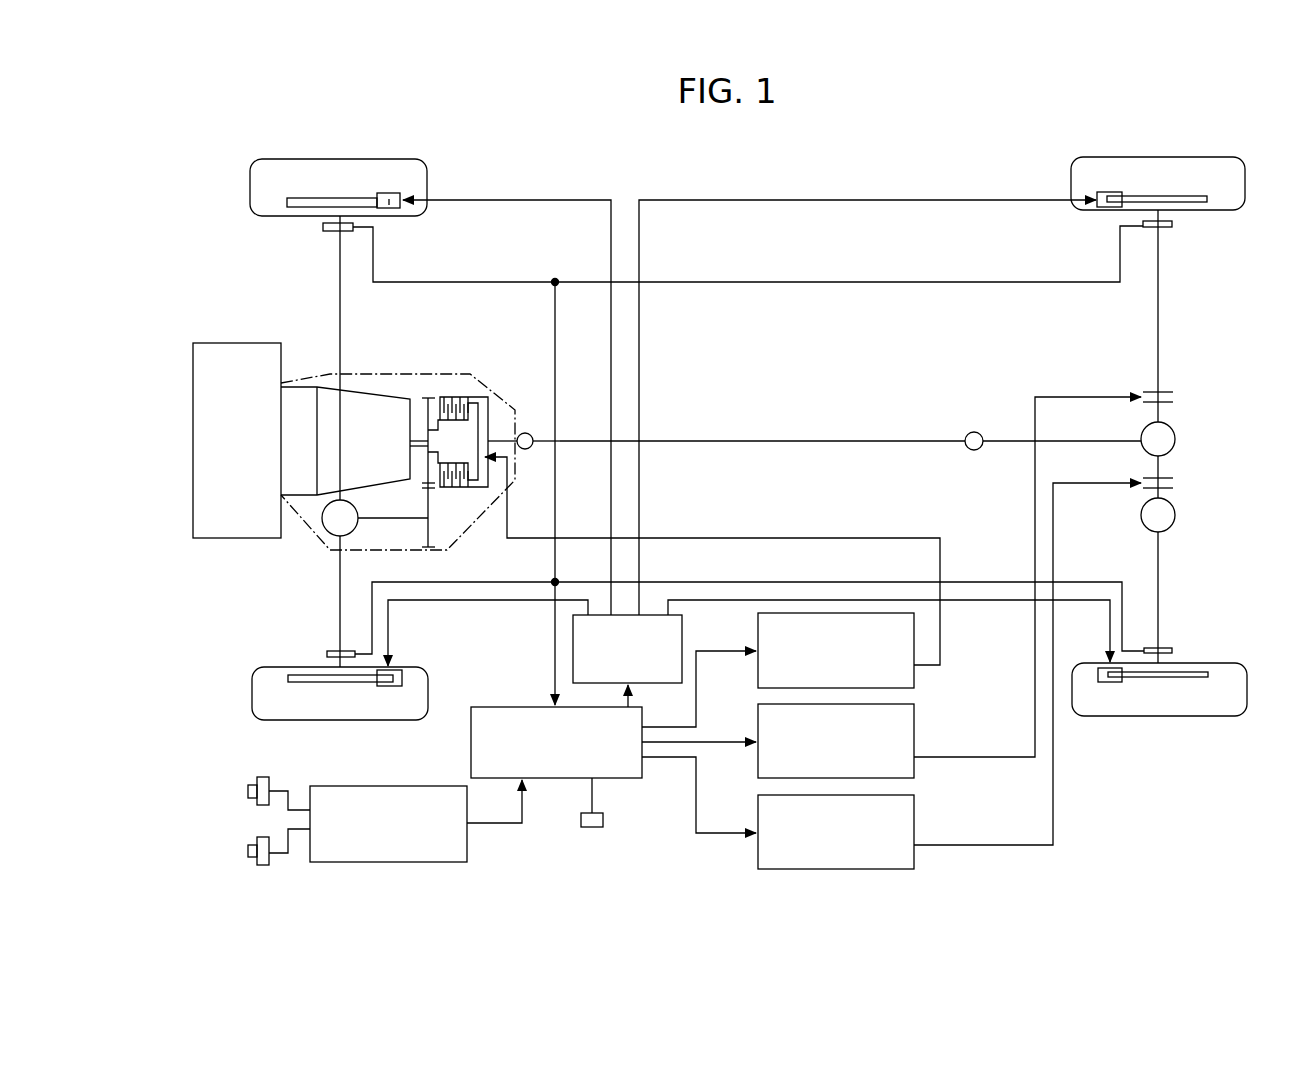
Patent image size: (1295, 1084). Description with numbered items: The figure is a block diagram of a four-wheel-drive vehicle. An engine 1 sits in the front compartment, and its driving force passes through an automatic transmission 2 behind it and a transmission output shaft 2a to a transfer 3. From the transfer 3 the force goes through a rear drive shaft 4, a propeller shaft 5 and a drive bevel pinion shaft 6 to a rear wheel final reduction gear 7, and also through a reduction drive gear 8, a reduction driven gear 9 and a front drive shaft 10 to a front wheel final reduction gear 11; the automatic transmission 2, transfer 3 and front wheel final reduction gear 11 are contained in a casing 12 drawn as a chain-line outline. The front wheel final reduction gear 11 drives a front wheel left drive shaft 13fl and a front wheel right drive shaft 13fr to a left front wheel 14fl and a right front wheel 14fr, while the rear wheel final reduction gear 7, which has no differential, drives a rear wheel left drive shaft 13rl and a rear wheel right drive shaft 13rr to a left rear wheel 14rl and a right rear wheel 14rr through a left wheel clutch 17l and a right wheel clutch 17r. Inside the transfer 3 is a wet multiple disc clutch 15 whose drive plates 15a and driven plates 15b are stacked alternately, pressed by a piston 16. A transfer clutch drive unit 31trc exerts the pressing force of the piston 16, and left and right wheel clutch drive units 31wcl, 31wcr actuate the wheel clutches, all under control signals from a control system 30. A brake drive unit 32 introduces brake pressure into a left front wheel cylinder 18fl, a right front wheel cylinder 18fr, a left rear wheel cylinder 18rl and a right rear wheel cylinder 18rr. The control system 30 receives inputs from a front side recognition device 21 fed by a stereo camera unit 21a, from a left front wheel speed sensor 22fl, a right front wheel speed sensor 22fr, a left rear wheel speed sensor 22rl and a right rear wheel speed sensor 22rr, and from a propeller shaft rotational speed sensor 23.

The engine 1 is at (193, 445).
The automatic transmission 2 is at (330, 384).
The transmission output shaft 2a is at (420, 440).
The transfer 3 is at (490, 426).
The rear drive shaft 4 is at (520, 440).
The propeller shaft 5 is at (718, 441).
The drive bevel pinion shaft 6 is at (1007, 441).
The rear wheel final reduction gear 7 is at (1176, 440).
The reduction drive gear 8 is at (428, 397).
The reduction driven gear 9 is at (436, 540).
The front drive shaft 10 is at (378, 519).
The front wheel final reduction gear 11 is at (346, 537).
The casing 12 is at (362, 372).
The front wheel right drive shaft 13fr is at (340, 313).
The front wheel left drive shaft 13fl is at (340, 584).
The rear wheel right drive shaft 13rr is at (1160, 310).
The rear wheel left drive shaft 13rl is at (1160, 564).
The right front wheel 14fr is at (298, 159).
The left front wheel 14fl is at (283, 720).
The right rear wheel 14rr is at (1199, 157).
The left rear wheel 14rl is at (1210, 716).
The wet multiple disc clutch 15 is at (490, 396).
The drive plates 15a is at (480, 410).
The driven plates 15b is at (472, 410).
The piston 16 is at (479, 410).
The right wheel clutch 17r is at (1175, 397).
The left wheel clutch 17l is at (1175, 484).
The right front wheel cylinder 18fr is at (389, 193).
The left front wheel cylinder 18fl is at (388, 686).
The right rear wheel cylinder 18rr is at (1110, 192).
The left rear wheel cylinder 18rl is at (1110, 682).
The front side recognition device 21 is at (467, 848).
The stereo camera unit 21a is at (248, 852).
The right front wheel speed sensor 22fr is at (323, 227).
The left front wheel speed sensor 22fl is at (327, 654).
The right rear wheel speed sensor 22rr is at (1172, 226).
The left rear wheel speed sensor 22rl is at (1172, 651).
The propeller shaft rotational speed sensor 23 is at (591, 827).
The control system 30 is at (471, 765).
The transfer clutch drive unit 31trc is at (914, 665).
The right wheel clutch drive unit 31wcr is at (914, 757).
The left wheel clutch drive unit 31wcl is at (914, 845).
The brake drive unit 32 is at (682, 629).